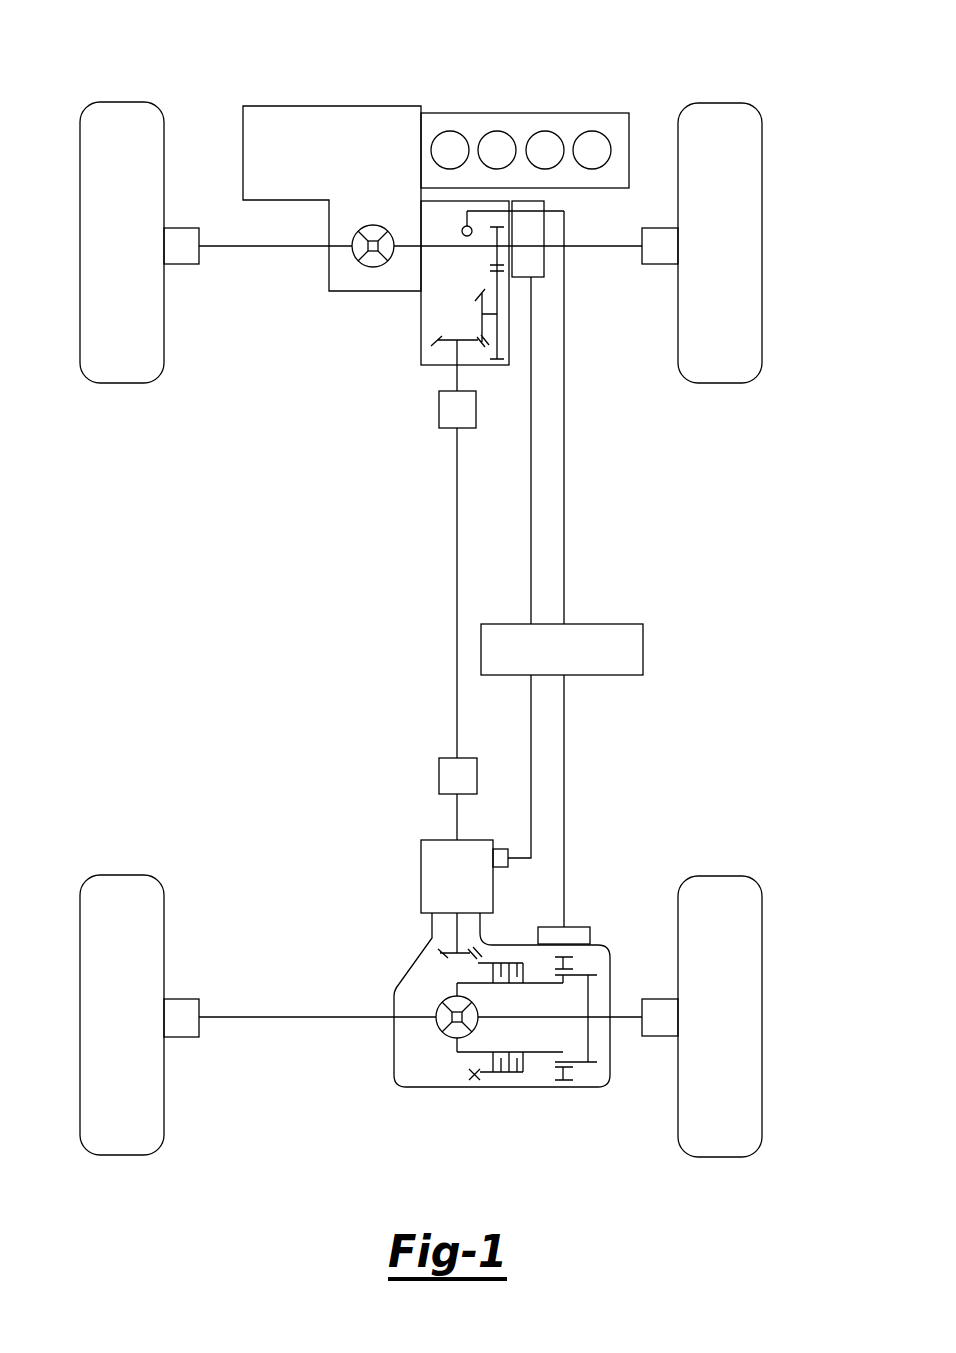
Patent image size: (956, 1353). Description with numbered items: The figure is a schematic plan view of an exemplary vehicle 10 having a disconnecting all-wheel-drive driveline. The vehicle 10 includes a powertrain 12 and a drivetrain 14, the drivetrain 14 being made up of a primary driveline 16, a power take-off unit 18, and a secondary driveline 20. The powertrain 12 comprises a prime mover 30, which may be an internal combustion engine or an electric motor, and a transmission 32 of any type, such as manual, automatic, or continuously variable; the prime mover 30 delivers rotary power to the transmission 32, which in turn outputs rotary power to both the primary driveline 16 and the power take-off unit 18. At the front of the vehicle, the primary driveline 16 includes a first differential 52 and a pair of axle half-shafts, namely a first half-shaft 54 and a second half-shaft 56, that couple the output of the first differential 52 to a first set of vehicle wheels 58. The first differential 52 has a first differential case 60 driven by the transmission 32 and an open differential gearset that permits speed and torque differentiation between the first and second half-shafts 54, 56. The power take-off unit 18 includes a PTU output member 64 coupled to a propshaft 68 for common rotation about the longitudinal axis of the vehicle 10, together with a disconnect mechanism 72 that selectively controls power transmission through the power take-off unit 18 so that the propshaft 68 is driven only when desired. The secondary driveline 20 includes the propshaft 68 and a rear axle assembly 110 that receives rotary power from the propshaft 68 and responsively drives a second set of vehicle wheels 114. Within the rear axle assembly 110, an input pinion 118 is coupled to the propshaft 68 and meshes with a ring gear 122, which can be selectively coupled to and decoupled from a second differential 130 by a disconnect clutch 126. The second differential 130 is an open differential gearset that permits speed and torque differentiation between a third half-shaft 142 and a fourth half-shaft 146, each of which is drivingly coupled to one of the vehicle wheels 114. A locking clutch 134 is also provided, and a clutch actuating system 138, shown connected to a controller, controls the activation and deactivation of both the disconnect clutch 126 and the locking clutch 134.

The vehicle 10 is at (451, 595).
The powertrain 12 is at (436, 158).
The drivetrain 14 is at (468, 569).
The primary driveline 16 is at (421, 256).
The power take-off unit 18 is at (451, 318).
The secondary driveline 20 is at (421, 1009).
The prime mover 30 is at (457, 112).
The transmission 32 is at (283, 106).
The first differential 52 is at (345, 251).
The first half-shaft 54 is at (218, 248).
The second half-shaft 56 is at (623, 248).
The first set of vehicle wheels 58 is at (122, 385).
The first differential case 60 is at (372, 225).
The PTU output member 64 is at (457, 380).
The propshaft 68 is at (457, 478).
The disconnect mechanism 72 is at (544, 272).
The rear axle assembly 110 is at (382, 991).
The second set of vehicle wheels 114 is at (122, 875).
The input pinion 118 is at (437, 930).
The ring gear 122 is at (470, 1083).
The disconnect clutch 126 is at (518, 1096).
The second differential 130 is at (426, 1040).
The locking clutch 134 is at (588, 1096).
The clutch actuating system 138 is at (578, 927).
The third half-shaft 142 is at (234, 1017).
The fourth half-shaft 146 is at (627, 1017).